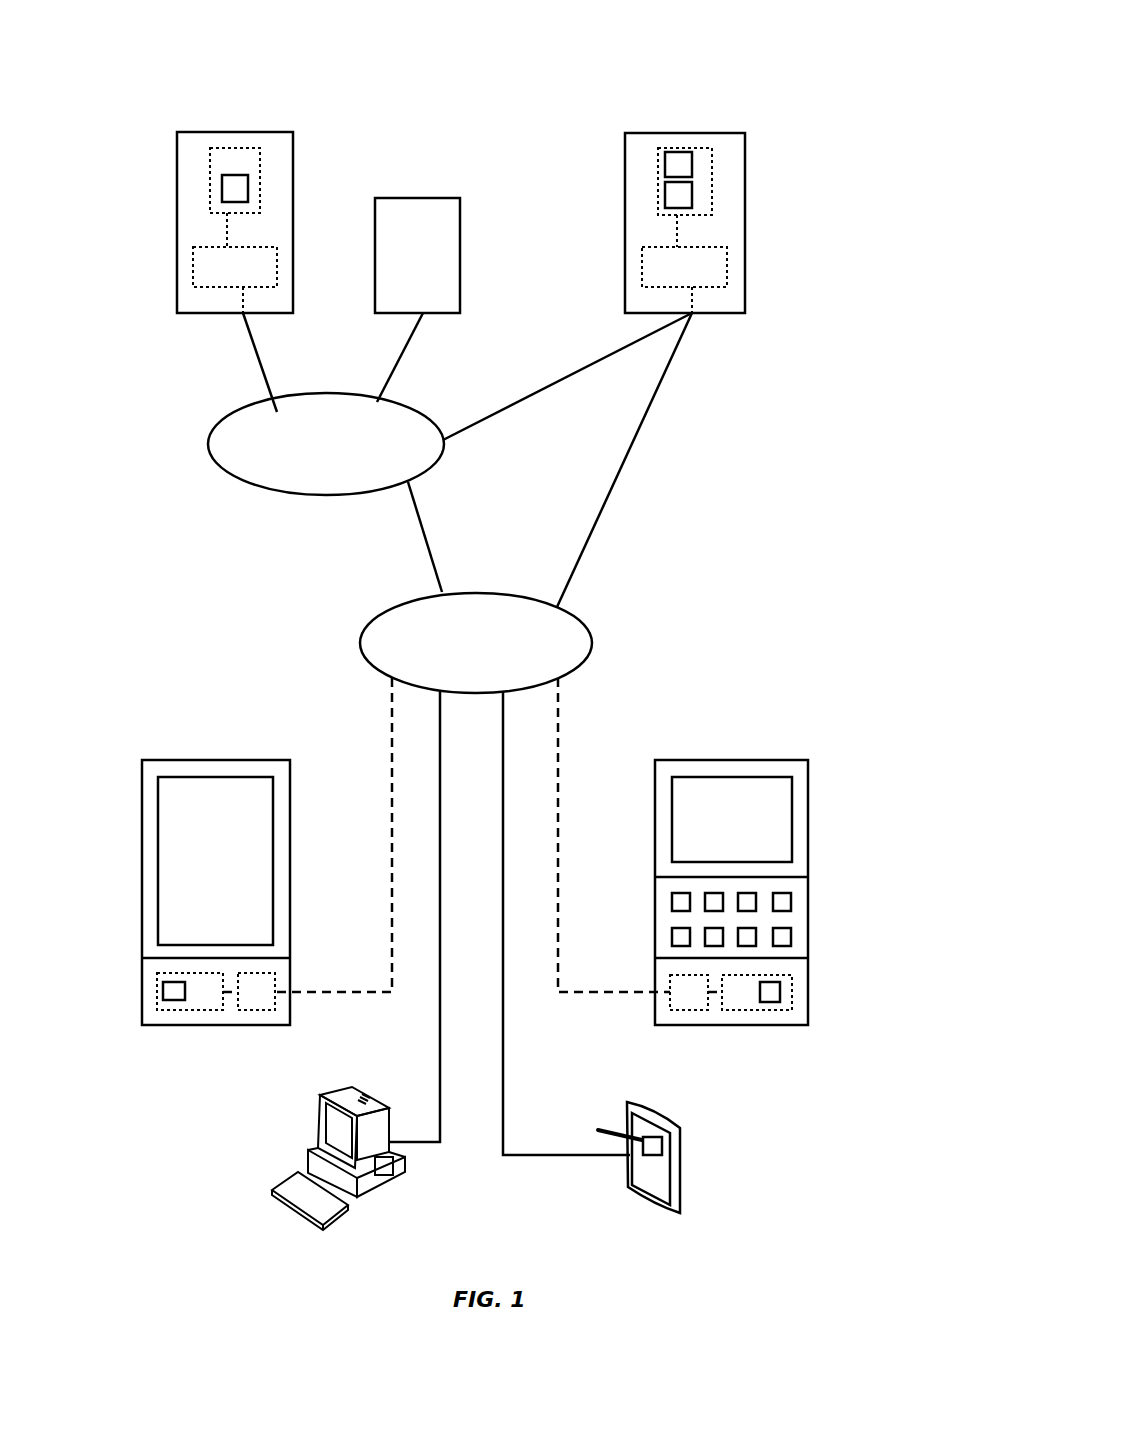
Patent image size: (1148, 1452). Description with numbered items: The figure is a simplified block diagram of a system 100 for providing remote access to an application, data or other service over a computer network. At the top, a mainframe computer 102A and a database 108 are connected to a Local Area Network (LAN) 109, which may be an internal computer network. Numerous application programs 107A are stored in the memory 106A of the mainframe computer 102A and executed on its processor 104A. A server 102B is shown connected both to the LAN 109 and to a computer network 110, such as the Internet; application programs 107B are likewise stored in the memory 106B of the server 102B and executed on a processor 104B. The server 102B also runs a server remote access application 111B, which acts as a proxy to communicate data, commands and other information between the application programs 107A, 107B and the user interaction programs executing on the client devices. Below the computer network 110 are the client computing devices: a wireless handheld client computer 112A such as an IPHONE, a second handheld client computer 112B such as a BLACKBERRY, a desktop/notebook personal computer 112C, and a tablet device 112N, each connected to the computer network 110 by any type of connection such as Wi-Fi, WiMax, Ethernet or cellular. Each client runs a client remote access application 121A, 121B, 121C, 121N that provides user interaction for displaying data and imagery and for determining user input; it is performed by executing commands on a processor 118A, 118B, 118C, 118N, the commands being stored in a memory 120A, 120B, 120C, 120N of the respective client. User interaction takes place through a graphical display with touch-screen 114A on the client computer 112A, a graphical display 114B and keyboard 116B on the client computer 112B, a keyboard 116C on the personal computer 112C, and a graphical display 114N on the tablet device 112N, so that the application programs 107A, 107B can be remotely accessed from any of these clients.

The system 100 is at (880, 98).
The mainframe computer 102A is at (227, 132).
The memory 106A is at (243, 165).
The application programs 107A is at (232, 192).
The processor 104A is at (225, 263).
The database 108 is at (410, 247).
The server 102B is at (687, 133).
The server remote access application 111B is at (685, 167).
The application programs 107B is at (687, 198).
The memory 106B is at (695, 167).
The processor 104B is at (693, 265).
The Local Area Network (LAN) 109 is at (377, 428).
The computer network 110 is at (557, 642).
The client computer 112A is at (142, 797).
The graphical display with touch-screen 114A is at (208, 867).
The client remote access application 121A is at (168, 992).
The memory 120A is at (190, 998).
The processor 118A is at (257, 998).
The client computer 112B is at (792, 768).
The graphical display 114B is at (740, 818).
The keyboard 116B is at (773, 917).
The client remote access application 121B is at (767, 993).
The processor 118B is at (690, 998).
The memory 120B is at (758, 1000).
The desktop/notebook personal computer 112C is at (315, 1145).
The client remote access application 121C is at (382, 1168).
The memory 120C is at (370, 1180).
The processor 118C is at (373, 1190).
The keyboard 116C is at (292, 1210).
The client remote access application 121N is at (657, 1143).
The tablet device 112N is at (677, 1150).
The memory 120N is at (673, 1183).
The processor 118N is at (675, 1193).
The graphical display 114N is at (647, 1175).